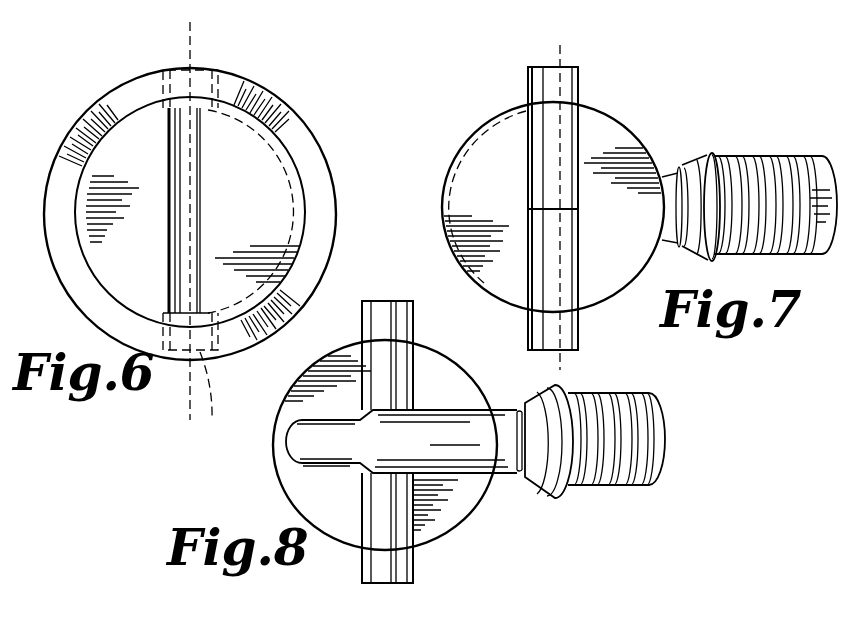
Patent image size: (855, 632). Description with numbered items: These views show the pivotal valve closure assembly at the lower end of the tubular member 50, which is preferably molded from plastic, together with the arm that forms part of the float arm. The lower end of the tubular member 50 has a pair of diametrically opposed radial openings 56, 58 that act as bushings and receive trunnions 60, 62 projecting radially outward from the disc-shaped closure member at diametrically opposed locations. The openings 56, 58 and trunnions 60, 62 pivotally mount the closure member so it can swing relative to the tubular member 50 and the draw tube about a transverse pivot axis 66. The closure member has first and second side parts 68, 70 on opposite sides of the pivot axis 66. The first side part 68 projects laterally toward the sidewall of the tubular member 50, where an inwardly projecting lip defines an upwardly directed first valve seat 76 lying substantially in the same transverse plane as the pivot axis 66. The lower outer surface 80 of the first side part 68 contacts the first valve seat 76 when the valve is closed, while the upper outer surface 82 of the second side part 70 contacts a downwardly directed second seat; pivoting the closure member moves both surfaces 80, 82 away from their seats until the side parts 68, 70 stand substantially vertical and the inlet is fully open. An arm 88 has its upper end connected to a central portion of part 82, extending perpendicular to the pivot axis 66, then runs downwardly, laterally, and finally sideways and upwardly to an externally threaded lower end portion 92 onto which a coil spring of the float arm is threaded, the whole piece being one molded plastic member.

In FIG. 6, the tubular member 50 is at (53, 165).
In FIG. 6, the radial opening 56 is at (200, 65).
In FIG. 6, the radial opening 58 is at (215, 393).
In FIG. 6, the trunnion 60 is at (207, 103).
In FIG. 7, the trunnion 60 is at (579, 330).
In FIG. 8, the trunnion 60 is at (385, 312).
In FIG. 6, the trunnion 62 is at (163, 328).
In FIG. 7, the trunnion 62 is at (570, 83).
In FIG. 8, the trunnion 62 is at (400, 561).
In FIG. 6, the transverse pivot axis 66 is at (190, 32).
In FIG. 7, the transverse pivot axis 66 is at (556, 127).
In FIG. 6, the first side part 68 is at (267, 187).
In FIG. 7, the first side part 68 is at (603, 140).
In FIG. 8, the first side part 68 is at (307, 393).
In FIG. 6, the second side part 70 is at (107, 245).
In FIG. 7, the second side part 70 is at (482, 158).
In FIG. 8, the second side part 70 is at (440, 372).
In FIG. 6, the first valve seat 76 is at (295, 225).
In FIG. 8, the lower outer surface 80 is at (482, 483).
In FIG. 7, the upper outer surface 82 is at (473, 203).
In FIG. 7, the arm 88 is at (678, 170).
In FIG. 8, the arm 88 is at (453, 470).
In FIG. 7, the lower end portion 92 is at (786, 157).
In FIG. 8, the lower end portion 92 is at (600, 487).